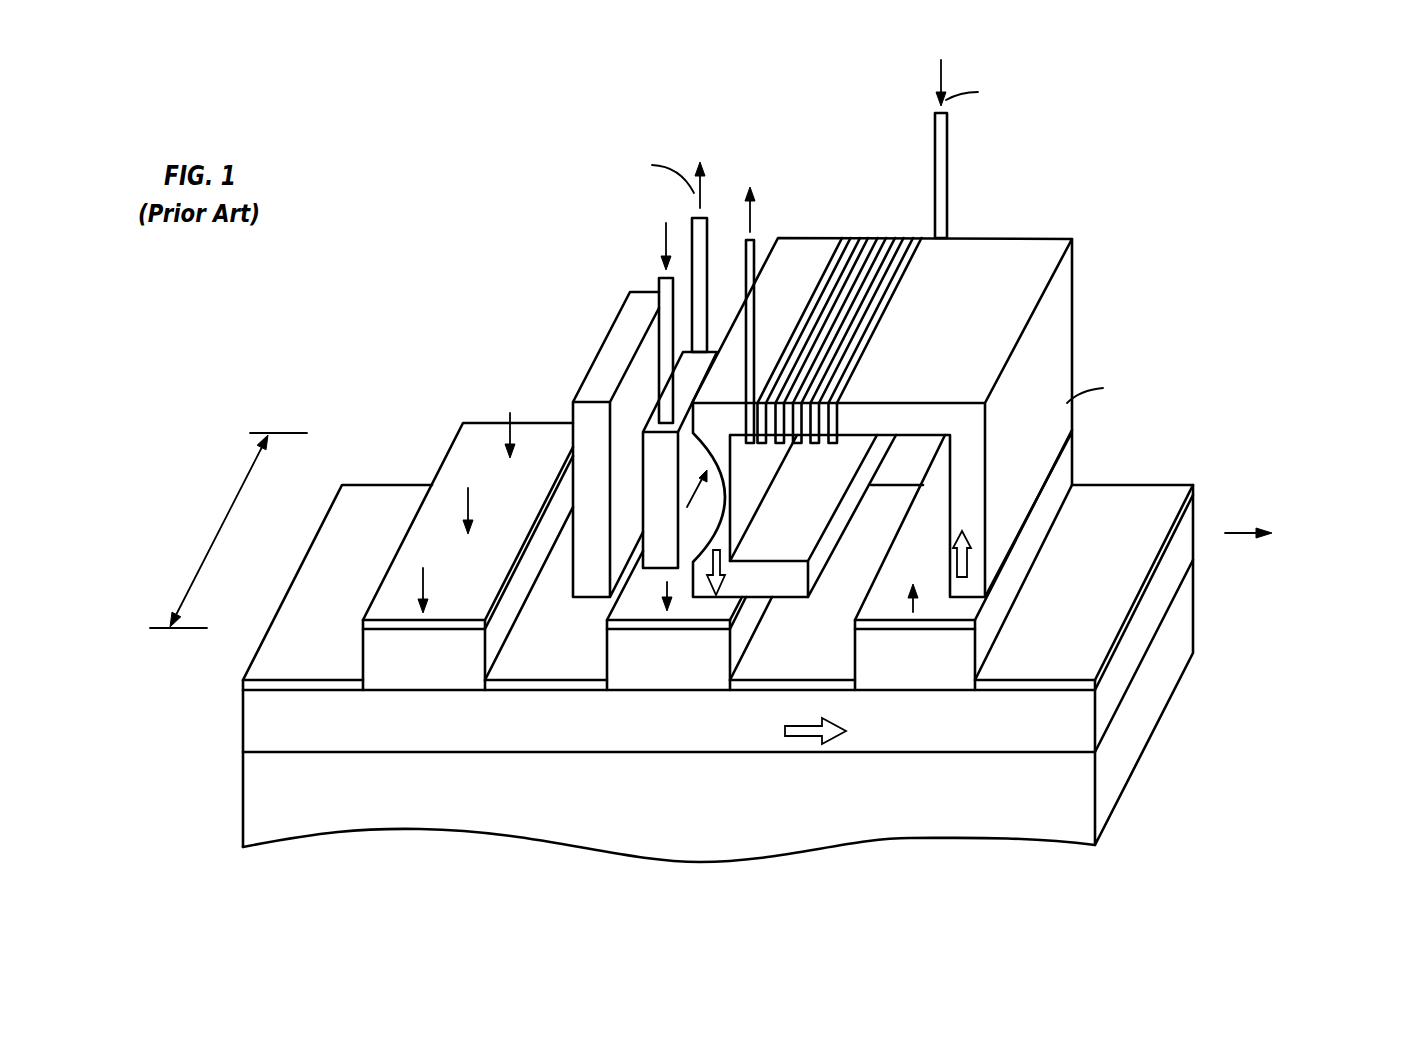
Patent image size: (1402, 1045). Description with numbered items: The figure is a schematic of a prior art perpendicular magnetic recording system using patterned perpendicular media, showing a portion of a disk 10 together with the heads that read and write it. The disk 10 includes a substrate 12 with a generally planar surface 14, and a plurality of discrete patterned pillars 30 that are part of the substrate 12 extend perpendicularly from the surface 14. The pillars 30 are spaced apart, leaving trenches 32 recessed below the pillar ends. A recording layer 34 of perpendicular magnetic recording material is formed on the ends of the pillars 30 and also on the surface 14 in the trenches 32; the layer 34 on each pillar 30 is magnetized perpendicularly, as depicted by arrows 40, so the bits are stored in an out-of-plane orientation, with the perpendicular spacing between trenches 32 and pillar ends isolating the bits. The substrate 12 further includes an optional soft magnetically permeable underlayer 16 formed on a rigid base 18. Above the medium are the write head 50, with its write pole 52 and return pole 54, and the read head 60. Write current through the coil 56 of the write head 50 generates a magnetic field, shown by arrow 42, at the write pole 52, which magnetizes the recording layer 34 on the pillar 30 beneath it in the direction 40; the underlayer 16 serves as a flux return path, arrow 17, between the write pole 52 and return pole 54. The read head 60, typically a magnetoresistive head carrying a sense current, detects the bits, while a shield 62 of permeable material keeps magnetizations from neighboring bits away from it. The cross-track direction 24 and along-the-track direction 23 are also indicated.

The disk 10 is at (1142, 808).
The substrate 12 is at (698, 682).
The surface 14 is at (696, 566).
The soft underlayer 16 is at (1070, 715).
The flux return path arrow 17 is at (800, 742).
The base 18 is at (1012, 827).
The along-the-track direction 23 is at (1268, 505).
The cross-track direction 24 is at (248, 475).
The pillars 30 is at (696, 566).
The trenches 32 is at (367, 500).
The recording layer 34 is at (368, 622).
The magnetization arrows 40 is at (507, 430).
The magnetic field arrow 42 is at (965, 568).
The write head 50 is at (962, 328).
The write pole 52 is at (1055, 345).
The return pole 54 is at (852, 457).
The coil 56 is at (843, 245).
The read head 60 is at (653, 440).
The shield 62 is at (573, 418).